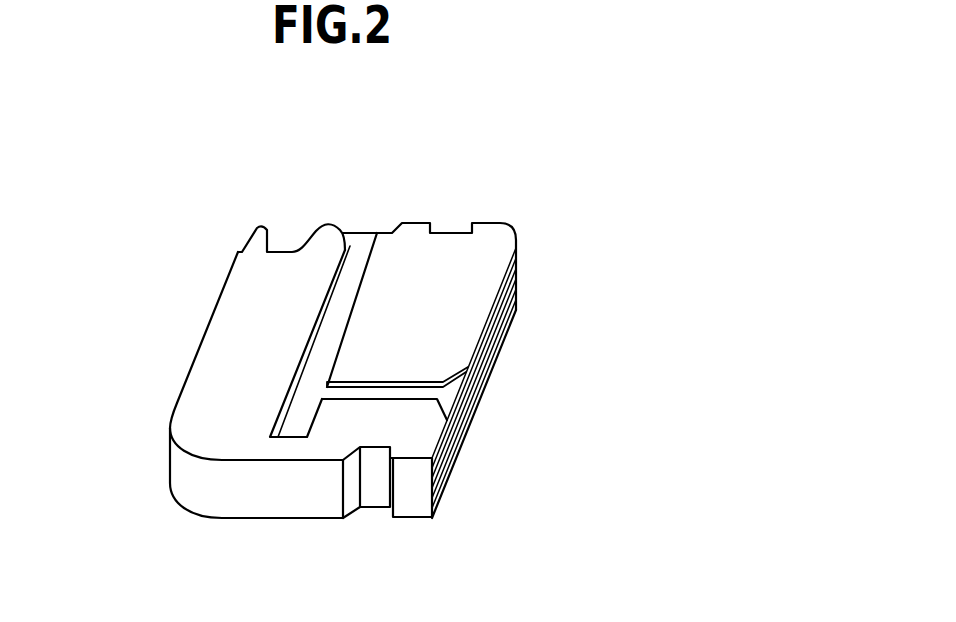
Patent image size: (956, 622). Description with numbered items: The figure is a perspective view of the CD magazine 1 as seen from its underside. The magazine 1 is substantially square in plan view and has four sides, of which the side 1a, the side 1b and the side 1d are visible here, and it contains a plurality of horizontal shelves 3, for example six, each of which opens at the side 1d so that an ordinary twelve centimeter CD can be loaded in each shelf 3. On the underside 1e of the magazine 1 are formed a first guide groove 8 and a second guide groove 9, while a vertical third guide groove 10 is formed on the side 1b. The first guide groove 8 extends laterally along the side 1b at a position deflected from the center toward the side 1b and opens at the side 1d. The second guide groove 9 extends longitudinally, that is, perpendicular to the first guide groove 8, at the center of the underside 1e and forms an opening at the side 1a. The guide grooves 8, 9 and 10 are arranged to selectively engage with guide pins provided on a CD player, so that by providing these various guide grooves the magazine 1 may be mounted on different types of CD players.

The CD magazine 1 is at (527, 190).
The side 1a is at (377, 233).
The side 1b is at (270, 488).
The side 1d is at (460, 442).
The underside 1e is at (228, 367).
The horizontal shelf 3 is at (483, 363).
The first guide groove 8 is at (387, 395).
The second guide groove 9 is at (352, 282).
The third guide groove 10 is at (380, 487).